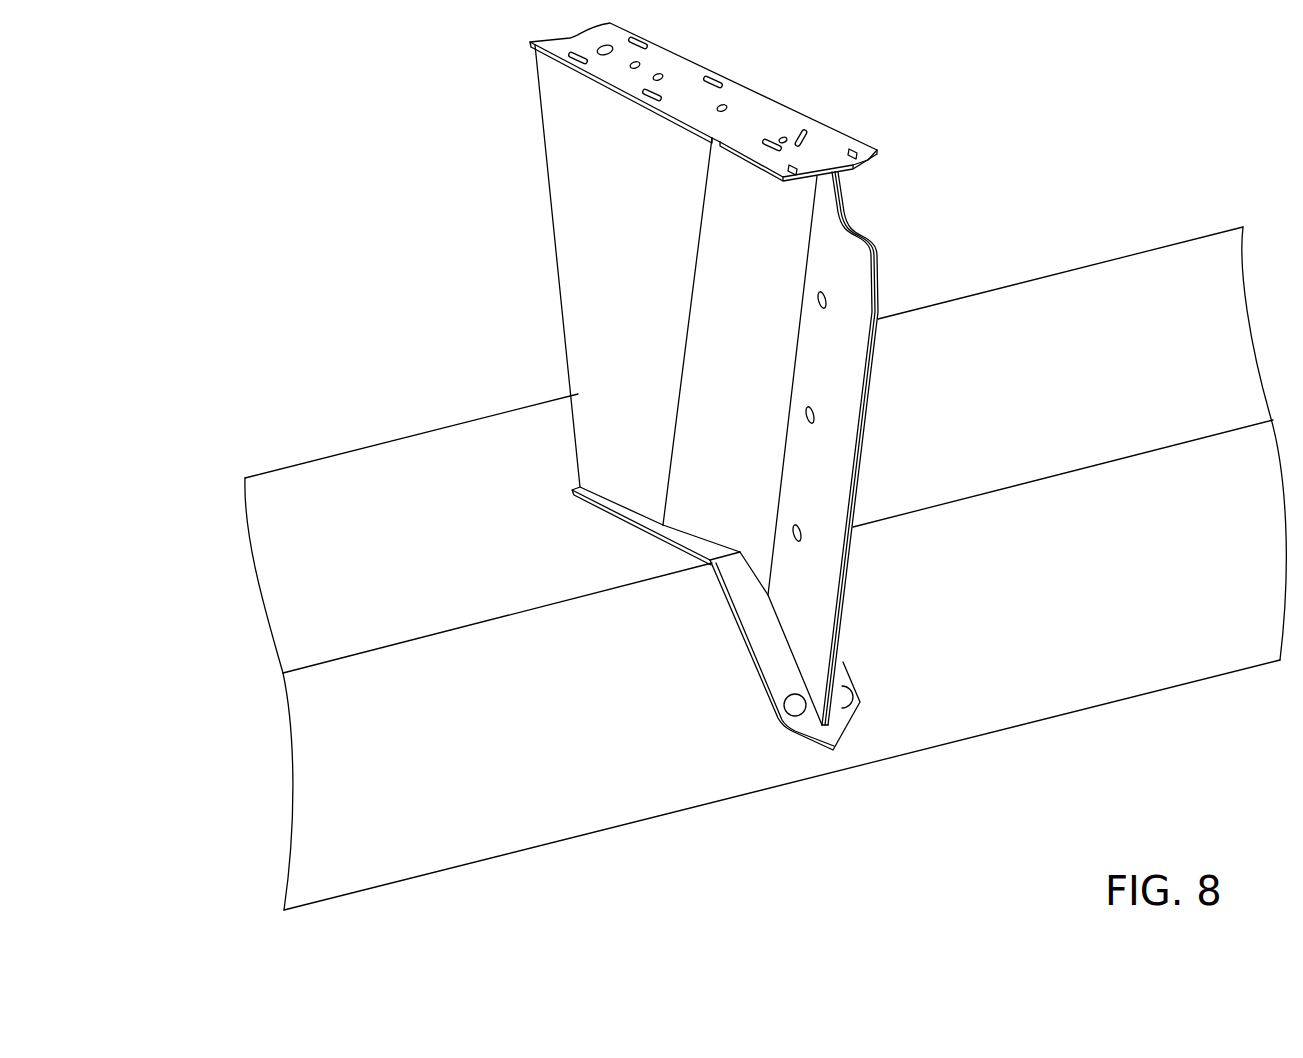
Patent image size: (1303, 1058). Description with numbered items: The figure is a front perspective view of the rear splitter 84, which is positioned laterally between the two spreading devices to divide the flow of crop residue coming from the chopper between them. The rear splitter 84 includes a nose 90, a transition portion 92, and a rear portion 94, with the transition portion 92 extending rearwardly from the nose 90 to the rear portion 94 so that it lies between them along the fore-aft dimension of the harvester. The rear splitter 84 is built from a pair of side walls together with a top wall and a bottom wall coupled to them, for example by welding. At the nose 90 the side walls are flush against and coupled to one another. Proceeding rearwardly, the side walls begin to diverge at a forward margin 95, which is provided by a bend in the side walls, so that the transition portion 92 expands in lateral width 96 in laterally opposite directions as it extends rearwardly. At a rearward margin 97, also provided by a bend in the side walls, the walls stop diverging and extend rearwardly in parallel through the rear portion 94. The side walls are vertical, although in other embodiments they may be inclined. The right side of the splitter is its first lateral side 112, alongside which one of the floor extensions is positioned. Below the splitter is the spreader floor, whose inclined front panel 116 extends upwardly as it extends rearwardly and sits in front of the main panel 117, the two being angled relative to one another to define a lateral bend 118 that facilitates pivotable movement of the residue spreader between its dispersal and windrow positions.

The rear splitter 84 is at (425, 175).
The nose 90 is at (838, 376).
The transition portion 92 is at (710, 342).
The rear portion 94 is at (595, 263).
The forward margin 95 is at (778, 502).
The lateral width 96 is at (812, 273).
The rearward margin 97 is at (675, 423).
The first lateral side 112 is at (720, 242).
The front panel 116 is at (765, 580).
The main panel 117 is at (352, 480).
The lateral bend 118 is at (443, 633).